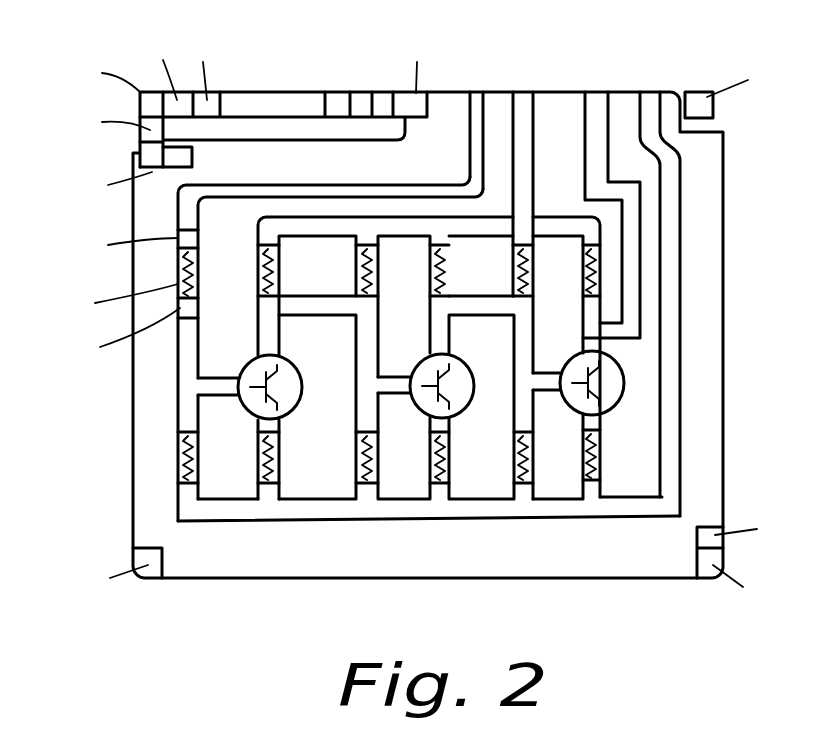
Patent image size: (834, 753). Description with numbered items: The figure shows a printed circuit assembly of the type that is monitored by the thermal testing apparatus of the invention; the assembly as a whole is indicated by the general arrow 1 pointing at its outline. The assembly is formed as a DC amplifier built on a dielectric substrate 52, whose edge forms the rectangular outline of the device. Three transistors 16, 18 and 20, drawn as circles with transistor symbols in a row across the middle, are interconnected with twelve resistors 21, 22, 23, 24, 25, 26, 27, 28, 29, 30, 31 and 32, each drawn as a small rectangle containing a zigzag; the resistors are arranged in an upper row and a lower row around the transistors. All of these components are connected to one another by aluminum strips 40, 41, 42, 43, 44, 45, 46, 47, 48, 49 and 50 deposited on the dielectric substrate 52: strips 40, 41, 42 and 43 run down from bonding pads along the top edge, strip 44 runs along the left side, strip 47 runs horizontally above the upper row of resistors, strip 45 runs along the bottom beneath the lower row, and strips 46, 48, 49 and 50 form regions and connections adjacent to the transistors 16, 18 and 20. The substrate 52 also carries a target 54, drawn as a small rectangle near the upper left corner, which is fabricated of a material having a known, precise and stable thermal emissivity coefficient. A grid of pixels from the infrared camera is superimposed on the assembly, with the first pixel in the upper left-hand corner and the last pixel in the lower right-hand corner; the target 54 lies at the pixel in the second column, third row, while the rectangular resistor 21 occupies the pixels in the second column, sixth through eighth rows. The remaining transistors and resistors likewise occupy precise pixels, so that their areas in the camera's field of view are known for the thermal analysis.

The integrated circuit chip 1 is at (441, 326).
The transistor 16 is at (293, 393).
The transistor 18 is at (463, 393).
The transistor 20 is at (613, 395).
The resistor 21 is at (200, 278).
The resistor 22 is at (198, 468).
The resistor 23 is at (280, 275).
The resistor 24 is at (280, 467).
The resistor 25 is at (378, 275).
The resistor 26 is at (378, 467).
The resistor 27 is at (450, 275).
The resistor 28 is at (450, 463).
The resistor 29 is at (517, 267).
The resistor 30 is at (533, 463).
The resistor 31 is at (585, 268).
The resistor 32 is at (600, 460).
The aluminum strip 40 is at (475, 95).
The aluminum strip 41 is at (523, 97).
The aluminum strip 42 is at (595, 93).
The aluminum strip 43 is at (648, 95).
The aluminum strip 44 is at (183, 385).
The aluminum strip 45 is at (247, 513).
The aluminum strip 46 is at (305, 308).
The aluminum strip 47 is at (408, 217).
The aluminum strip 48 is at (465, 305).
The aluminum strip 49 is at (372, 343).
The aluminum strip 50 is at (525, 378).
The dielectric substrate 52 is at (713, 265).
The target 54 is at (165, 153).